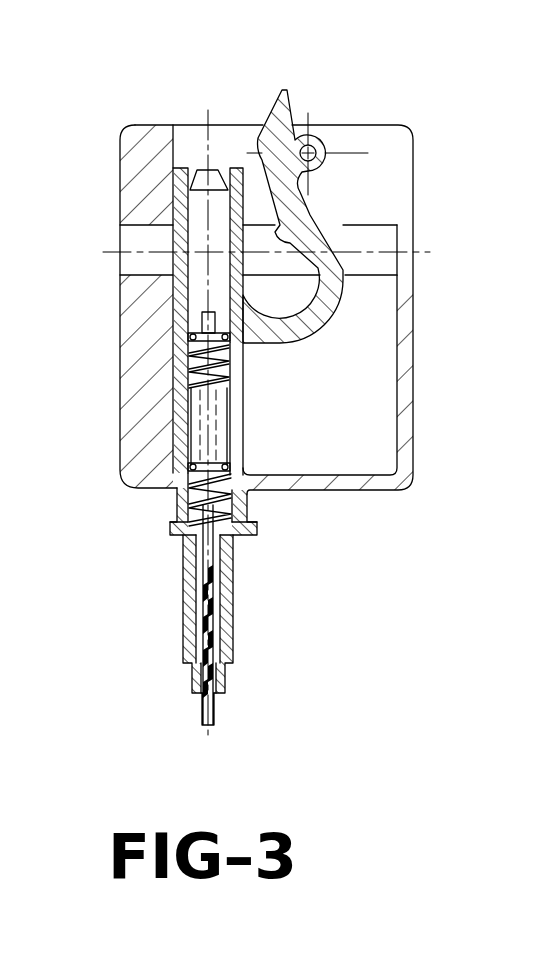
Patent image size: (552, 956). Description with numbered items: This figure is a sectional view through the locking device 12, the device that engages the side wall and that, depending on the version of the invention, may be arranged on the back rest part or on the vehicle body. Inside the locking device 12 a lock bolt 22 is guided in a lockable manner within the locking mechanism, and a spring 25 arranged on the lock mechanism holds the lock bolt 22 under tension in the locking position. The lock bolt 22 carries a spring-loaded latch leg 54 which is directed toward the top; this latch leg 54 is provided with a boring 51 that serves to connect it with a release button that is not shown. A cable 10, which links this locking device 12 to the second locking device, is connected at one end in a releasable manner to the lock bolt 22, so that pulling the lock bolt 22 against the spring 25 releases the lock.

The cable 10 is at (214, 708).
The locking device 12 is at (122, 128).
The lock bolt 22 is at (184, 299).
The spring 25 is at (190, 385).
The boring 51 is at (314, 155).
The latch leg 54 is at (290, 112).